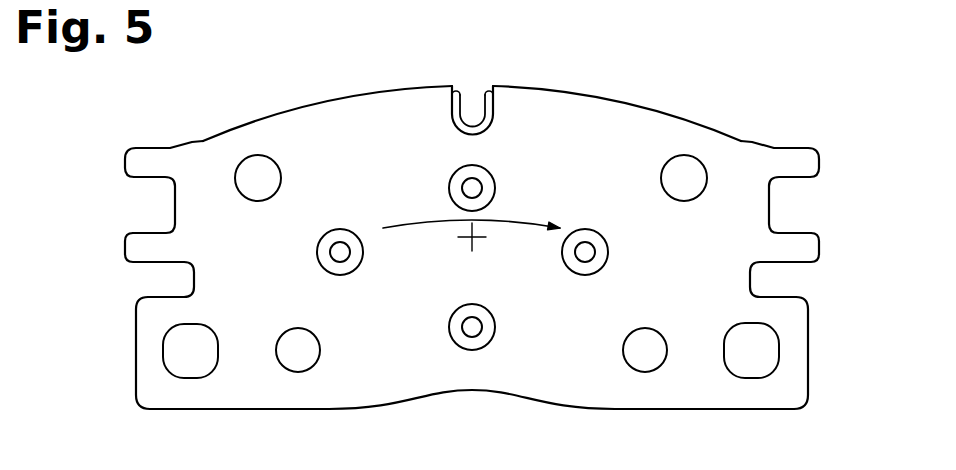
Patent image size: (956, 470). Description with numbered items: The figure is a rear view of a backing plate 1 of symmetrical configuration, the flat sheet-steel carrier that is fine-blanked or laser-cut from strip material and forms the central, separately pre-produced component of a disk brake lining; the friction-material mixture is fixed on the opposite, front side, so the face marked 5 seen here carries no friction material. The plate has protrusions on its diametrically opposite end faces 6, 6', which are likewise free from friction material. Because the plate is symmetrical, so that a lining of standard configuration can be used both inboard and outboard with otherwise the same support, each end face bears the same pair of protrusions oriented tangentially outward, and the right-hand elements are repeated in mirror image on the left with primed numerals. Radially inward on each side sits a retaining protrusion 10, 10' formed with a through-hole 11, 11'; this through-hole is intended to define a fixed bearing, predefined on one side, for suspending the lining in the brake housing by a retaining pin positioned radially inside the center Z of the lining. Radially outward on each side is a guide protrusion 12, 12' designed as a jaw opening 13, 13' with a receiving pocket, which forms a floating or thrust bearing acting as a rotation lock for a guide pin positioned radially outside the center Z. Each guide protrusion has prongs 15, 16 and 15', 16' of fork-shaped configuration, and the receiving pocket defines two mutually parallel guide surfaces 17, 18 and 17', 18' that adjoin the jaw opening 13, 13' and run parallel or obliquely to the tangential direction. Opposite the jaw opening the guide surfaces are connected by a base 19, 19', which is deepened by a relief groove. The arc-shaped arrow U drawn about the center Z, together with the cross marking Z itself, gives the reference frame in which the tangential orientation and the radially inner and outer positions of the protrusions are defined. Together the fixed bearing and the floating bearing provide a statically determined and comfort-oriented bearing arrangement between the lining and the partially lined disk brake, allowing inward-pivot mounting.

The backing plate 1 is at (333, 97).
The friction lining carrier face 5 is at (564, 176).
The end face 6 is at (814, 298).
The end face 6' is at (124, 298).
The retaining protrusion 10 is at (816, 353).
The retaining protrusion 10' is at (119, 353).
The through-hole 11 is at (743, 396).
The through-hole 11' is at (183, 397).
The guide protrusion 12 is at (774, 112).
The guide protrusion 12' is at (168, 113).
The jaw opening 13 is at (831, 205).
The jaw opening 13' is at (106, 204).
The prong 15 is at (824, 125).
The prong 15' is at (105, 125).
The prong 16 is at (826, 263).
The prong 16' is at (111, 263).
The guide surface 17 is at (831, 166).
The guide surface 17' is at (106, 166).
The guide surface 18 is at (831, 237).
The guide surface 18' is at (106, 237).
The base 19 is at (715, 138).
The base 19' is at (227, 138).
The circumferential direction U is at (423, 220).
The center of the disk brake lining Z is at (474, 240).